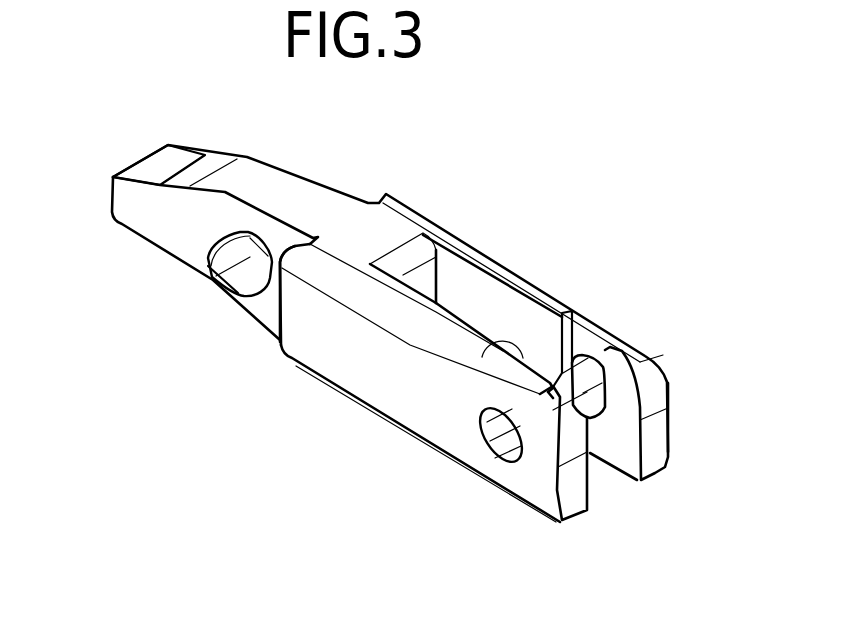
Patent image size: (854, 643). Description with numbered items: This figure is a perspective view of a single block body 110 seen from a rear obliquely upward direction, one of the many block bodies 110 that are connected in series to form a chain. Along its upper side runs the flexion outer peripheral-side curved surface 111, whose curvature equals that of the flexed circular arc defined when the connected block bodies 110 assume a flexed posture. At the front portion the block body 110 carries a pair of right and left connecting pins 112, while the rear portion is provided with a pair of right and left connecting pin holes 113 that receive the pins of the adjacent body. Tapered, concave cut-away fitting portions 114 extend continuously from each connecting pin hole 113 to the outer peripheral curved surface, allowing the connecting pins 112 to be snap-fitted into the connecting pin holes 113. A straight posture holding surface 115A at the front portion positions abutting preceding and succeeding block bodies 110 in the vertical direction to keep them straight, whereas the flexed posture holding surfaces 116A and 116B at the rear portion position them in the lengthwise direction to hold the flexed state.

The block body 110 is at (640, 177).
The flexion outer peripheral-side curved surface 111 is at (317, 212).
The connecting pin 112 is at (217, 287).
The connecting pin hole 113 is at (500, 443).
The cut-away fitting portion 114 is at (588, 343).
The straight posture holding surface 115A is at (145, 243).
The flexed posture holding surface 116A is at (280, 318).
The flexed posture holding surface 116B is at (573, 492).